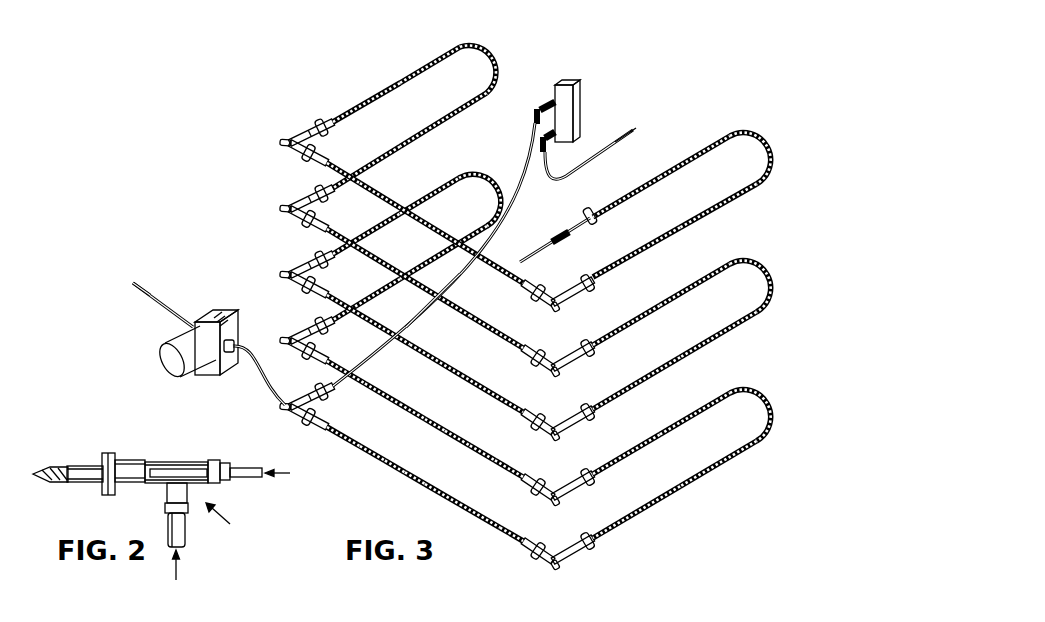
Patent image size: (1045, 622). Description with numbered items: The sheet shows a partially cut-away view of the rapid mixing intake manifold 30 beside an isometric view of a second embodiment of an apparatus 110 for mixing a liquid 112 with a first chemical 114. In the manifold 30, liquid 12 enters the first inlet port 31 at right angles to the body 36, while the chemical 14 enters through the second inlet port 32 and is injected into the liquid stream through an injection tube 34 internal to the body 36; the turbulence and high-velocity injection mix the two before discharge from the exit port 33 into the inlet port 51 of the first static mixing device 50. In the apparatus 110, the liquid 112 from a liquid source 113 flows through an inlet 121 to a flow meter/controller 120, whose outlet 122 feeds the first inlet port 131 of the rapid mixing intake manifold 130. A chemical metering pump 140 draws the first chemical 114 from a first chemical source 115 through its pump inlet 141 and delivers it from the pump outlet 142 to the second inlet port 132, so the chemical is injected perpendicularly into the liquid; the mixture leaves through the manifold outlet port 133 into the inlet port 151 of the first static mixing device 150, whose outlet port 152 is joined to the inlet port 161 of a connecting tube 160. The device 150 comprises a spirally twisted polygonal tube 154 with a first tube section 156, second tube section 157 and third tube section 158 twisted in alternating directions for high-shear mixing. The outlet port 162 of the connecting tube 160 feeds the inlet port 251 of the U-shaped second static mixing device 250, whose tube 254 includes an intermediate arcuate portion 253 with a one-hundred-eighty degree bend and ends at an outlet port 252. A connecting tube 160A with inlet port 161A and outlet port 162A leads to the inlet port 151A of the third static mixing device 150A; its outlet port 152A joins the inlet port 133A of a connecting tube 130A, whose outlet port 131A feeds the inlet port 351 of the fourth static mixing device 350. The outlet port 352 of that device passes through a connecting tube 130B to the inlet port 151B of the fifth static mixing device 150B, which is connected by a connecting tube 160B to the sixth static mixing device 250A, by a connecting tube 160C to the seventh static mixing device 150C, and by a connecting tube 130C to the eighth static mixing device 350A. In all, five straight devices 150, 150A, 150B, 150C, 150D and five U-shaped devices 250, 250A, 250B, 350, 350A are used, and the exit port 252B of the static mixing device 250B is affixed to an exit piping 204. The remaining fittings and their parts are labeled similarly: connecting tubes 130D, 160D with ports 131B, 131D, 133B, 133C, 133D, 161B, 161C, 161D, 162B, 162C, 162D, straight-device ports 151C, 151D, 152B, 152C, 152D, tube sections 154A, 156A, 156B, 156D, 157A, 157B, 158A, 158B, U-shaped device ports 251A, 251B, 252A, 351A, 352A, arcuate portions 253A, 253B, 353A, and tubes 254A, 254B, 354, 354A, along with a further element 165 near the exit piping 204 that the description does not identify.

In FIG. 2, the liquid 12 is at (166, 565).
In FIG. 2, the chemical 14 is at (283, 479).
In FIG. 2, the rapid mixing intake manifold 30 is at (225, 519).
In FIG. 2, the first inlet port 31 is at (167, 497).
In FIG. 2, the second inlet port 32 is at (237, 463).
In FIG. 2, the exit port 33 is at (127, 463).
In FIG. 2, the injection tube 34 is at (198, 469).
In FIG. 2, the rapid mixing intake manifold body 36 is at (170, 461).
In FIG. 2, the first static mixing device 50 is at (45, 486).
In FIG. 2, the inlet port 51 is at (92, 484).
In FIG. 3, the apparatus 110 is at (176, 86).
In FIG. 3, the liquid 112 is at (643, 122).
In FIG. 3, the liquid source 113 is at (628, 130).
In FIG. 3, the first chemical 114 is at (134, 287).
In FIG. 3, the first chemical source 115 is at (146, 293).
In FIG. 3, the flow meter/controller 120 is at (580, 80).
In FIG. 3, the inlet 121 is at (610, 139).
In FIG. 3, the outlet 122 is at (529, 142).
In FIG. 3, the rapid mixing intake manifold 130 is at (290, 412).
In FIG. 3, the connecting tube 130A is at (286, 336).
In FIG. 3, the connecting tube 130B is at (287, 270).
In FIG. 3, the connecting tube 130C is at (288, 208).
In FIG. 3, the distribution fitting 130D is at (288, 154).
In FIG. 3, the first inlet port 131 is at (320, 390).
In FIG. 3, the outlet port 131A is at (320, 328).
In FIG. 3, the upper outlet leg 131B is at (312, 266).
In FIG. 3, the upper outlet leg 131D is at (312, 134).
In FIG. 3, the second inlet port 132 is at (278, 404).
In FIG. 3, the manifold outlet port 133 is at (307, 420).
In FIG. 3, the inlet port 133A is at (303, 355).
In FIG. 3, the lower outlet leg 133B is at (300, 291).
In FIG. 3, the lower outlet leg 133C is at (300, 225).
In FIG. 3, the lower outlet leg 133D is at (300, 157).
In FIG. 3, the chemical metering pump 140 is at (218, 310).
In FIG. 3, the pump inlet 141 is at (181, 316).
In FIG. 3, the pump outlet 142 is at (232, 355).
In FIG. 3, the first static mixing device 150 is at (383, 464).
In FIG. 3, the third static mixing device 150A is at (390, 400).
In FIG. 3, the fifth static mixing device 150B is at (420, 351).
In FIG. 3, the seventh static mixing device 150C is at (437, 295).
In FIG. 3, the static mixing device 150D is at (456, 242).
In FIG. 3, the inlet port 151 is at (332, 431).
In FIG. 3, the inlet port 151A is at (523, 483).
In FIG. 3, the inlet port 151B is at (330, 298).
In FIG. 3, the tube segment 151C is at (523, 352).
In FIG. 3, the tube segment 151D is at (335, 168).
In FIG. 3, the outlet port 152 is at (523, 548).
In FIG. 3, the outlet port 152A is at (330, 365).
In FIG. 3, the tube segment 152B is at (523, 417).
In FIG. 3, the tube segment 152C is at (335, 234).
In FIG. 3, the tube segment 152D is at (523, 287).
In FIG. 3, the tube 154 is at (416, 486).
In FIG. 3, the tube wall 154A is at (437, 364).
In FIG. 3, the first tube section 156 is at (377, 455).
In FIG. 3, the tube section 156A is at (476, 447).
In FIG. 3, the tube section 156B is at (370, 322).
In FIG. 3, the tube section 156D is at (383, 198).
In FIG. 3, the second tube section 157 is at (405, 469).
In FIG. 3, the tube section 157A is at (441, 428).
In FIG. 3, the return line 157B is at (398, 336).
In FIG. 3, the third tube section 158 is at (478, 512).
In FIG. 3, the tube section 158A is at (378, 388).
In FIG. 3, the tube section 158B is at (478, 375).
In FIG. 3, the connecting tube 160 is at (574, 558).
In FIG. 3, the connecting tube 160A is at (552, 502).
In FIG. 3, the connecting tube 160B is at (553, 436).
In FIG. 3, the connecting tube 160C is at (551, 373).
In FIG. 3, the elbow fitting 160D is at (553, 308).
In FIG. 3, the inlet port 161 is at (545, 565).
In FIG. 3, the inlet port 161A is at (590, 491).
In FIG. 3, the fitting leg 161B is at (542, 431).
In FIG. 3, the fitting leg 161C is at (590, 362).
In FIG. 3, the fitting leg 161D is at (542, 302).
In FIG. 3, the outlet port 162 is at (592, 553).
In FIG. 3, the outlet port 162A is at (542, 496).
In FIG. 3, the fitting leg 162B is at (590, 426).
In FIG. 3, the fitting leg 162C is at (542, 367).
In FIG. 3, the fitting leg 162D is at (588, 298).
In FIG. 3, the probe coupling 165 is at (568, 228).
In FIG. 3, the exit piping 204 is at (541, 252).
In FIG. 3, the second static mixing device 250 is at (703, 473).
In FIG. 3, the sixth static mixing device 250A is at (700, 346).
In FIG. 3, the static mixing device 250B is at (700, 214).
In FIG. 3, the inlet port 251 is at (603, 530).
In FIG. 3, the lower loop tube 251A is at (603, 392).
In FIG. 3, the lower loop tube 251B is at (602, 268).
In FIG. 3, the outlet port 252 is at (603, 466).
In FIG. 3, the upper loop tube 252A is at (603, 337).
In FIG. 3, the exit port 252B is at (601, 210).
In FIG. 3, the intermediate arcuate portion 253 is at (768, 402).
In FIG. 3, the loop bend 253A is at (768, 272).
In FIG. 3, the loop bend 253B is at (768, 142).
In FIG. 3, the tube 254 is at (697, 412).
In FIG. 3, the loop top tube 254A is at (693, 286).
In FIG. 3, the loop top tube 254B is at (693, 158).
In FIG. 3, the fourth static mixing device 350 is at (403, 277).
In FIG. 3, the eighth static mixing device 350A is at (433, 127).
In FIG. 3, the inlet port 351 is at (333, 318).
In FIG. 3, the return tube end 351A is at (345, 180).
In FIG. 3, the outlet port 352 is at (345, 247).
In FIG. 3, the supply tube 352A is at (342, 117).
In FIG. 3, the loop bend 353A is at (500, 60).
In FIG. 3, the loop top tube 354 is at (433, 194).
In FIG. 3, the loop top tube 354A is at (428, 66).